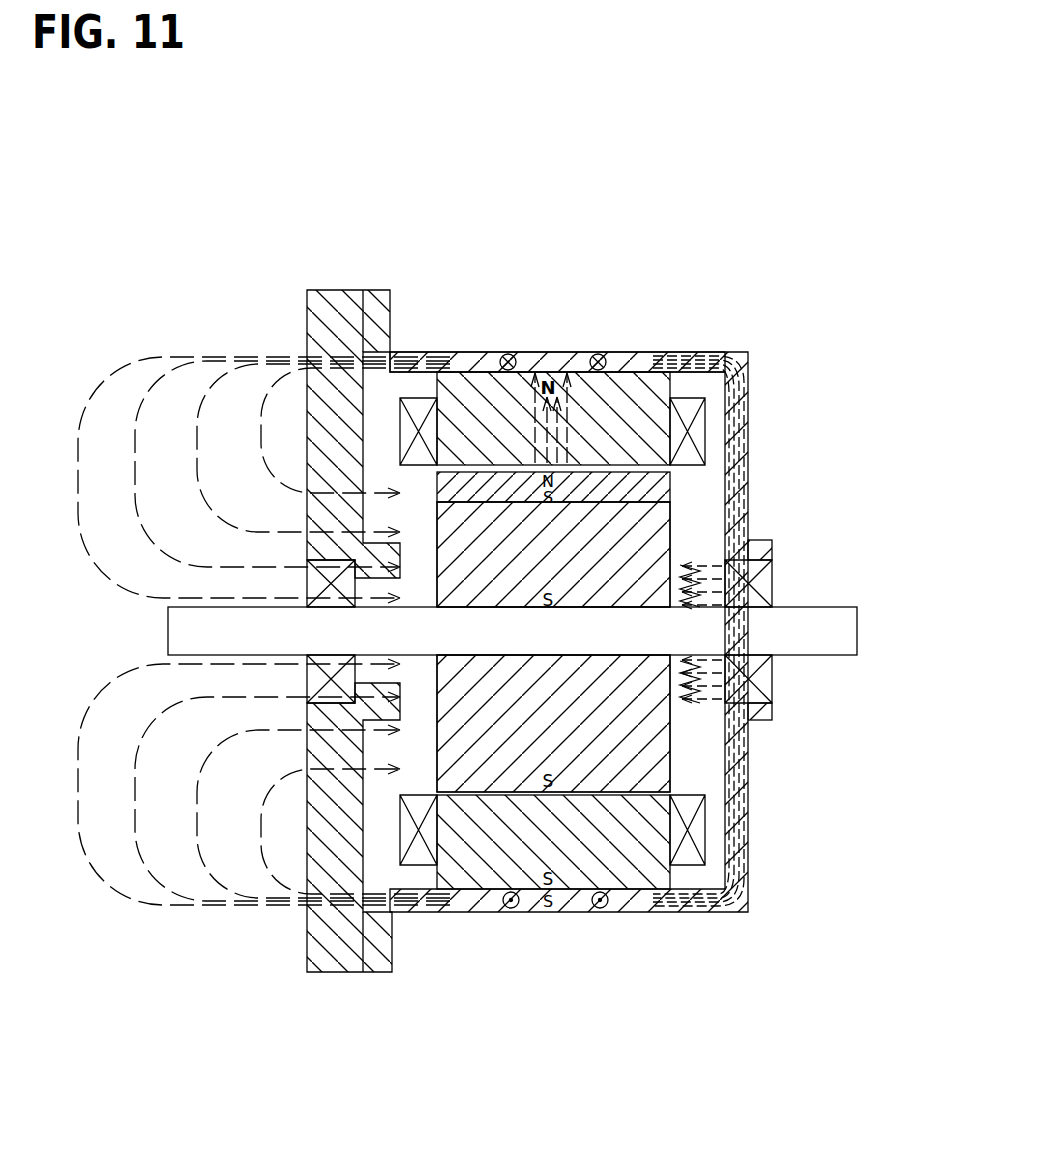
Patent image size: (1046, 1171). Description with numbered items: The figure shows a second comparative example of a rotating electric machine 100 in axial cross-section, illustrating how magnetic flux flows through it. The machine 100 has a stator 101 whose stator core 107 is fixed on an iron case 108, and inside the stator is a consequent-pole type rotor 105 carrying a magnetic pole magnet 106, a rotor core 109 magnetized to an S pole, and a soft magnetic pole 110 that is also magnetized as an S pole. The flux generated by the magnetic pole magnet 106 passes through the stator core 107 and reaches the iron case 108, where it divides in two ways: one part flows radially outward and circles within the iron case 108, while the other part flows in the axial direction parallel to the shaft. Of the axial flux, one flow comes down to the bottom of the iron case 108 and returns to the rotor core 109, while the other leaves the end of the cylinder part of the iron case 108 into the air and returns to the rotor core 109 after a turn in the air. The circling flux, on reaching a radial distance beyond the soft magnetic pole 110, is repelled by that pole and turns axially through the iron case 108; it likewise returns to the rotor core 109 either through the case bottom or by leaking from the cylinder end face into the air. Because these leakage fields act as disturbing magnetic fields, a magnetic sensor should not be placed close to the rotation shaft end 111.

The rotating electric machine 100 is at (704, 328).
The stator 101 is at (720, 419).
The consequent-pole type rotor 105 is at (686, 527).
The magnetic pole magnet 106 is at (672, 488).
The stator core 107 is at (686, 390).
The iron case 108 is at (463, 372).
The rotor core 109 is at (655, 550).
The soft magnetic pole 110 is at (670, 779).
The rotation shaft end 111 is at (188, 633).